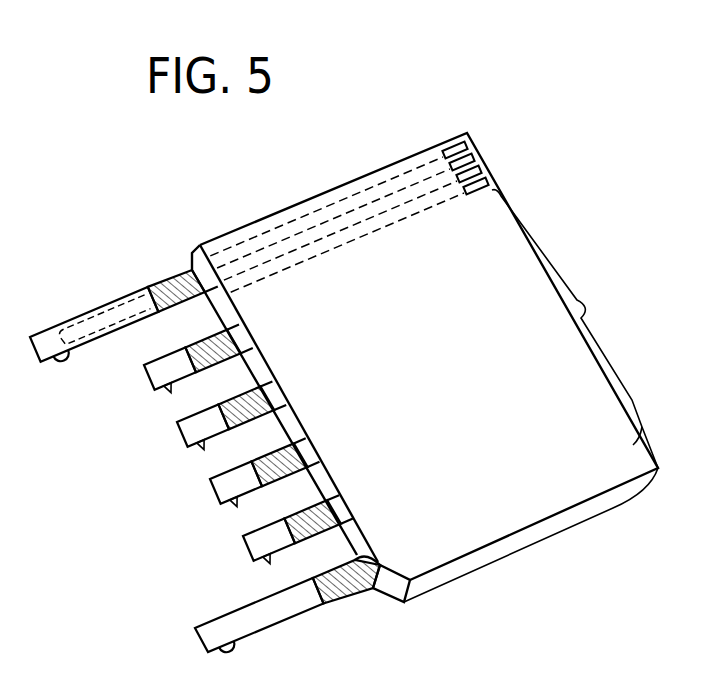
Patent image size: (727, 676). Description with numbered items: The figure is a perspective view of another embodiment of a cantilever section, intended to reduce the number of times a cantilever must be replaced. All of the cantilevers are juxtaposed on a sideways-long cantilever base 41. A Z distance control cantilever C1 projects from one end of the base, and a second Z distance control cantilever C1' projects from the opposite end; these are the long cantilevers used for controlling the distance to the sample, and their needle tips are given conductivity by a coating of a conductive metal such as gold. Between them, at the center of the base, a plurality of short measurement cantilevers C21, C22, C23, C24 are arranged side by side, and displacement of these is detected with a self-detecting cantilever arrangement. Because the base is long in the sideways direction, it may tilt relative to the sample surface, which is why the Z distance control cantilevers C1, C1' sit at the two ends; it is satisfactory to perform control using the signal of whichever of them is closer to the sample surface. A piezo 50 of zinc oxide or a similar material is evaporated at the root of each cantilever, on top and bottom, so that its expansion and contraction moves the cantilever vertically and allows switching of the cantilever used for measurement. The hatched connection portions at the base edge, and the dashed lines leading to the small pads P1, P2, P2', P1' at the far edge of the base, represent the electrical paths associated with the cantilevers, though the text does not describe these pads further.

The cantilever base 41 is at (527, 482).
The contact pad P1 is at (416, 93).
The contact pad P2 is at (481, 127).
The contact pad P2' is at (497, 156).
The contact pad P1' is at (530, 197).
The Z distance control cantilever C1 is at (124, 297).
The measurement cantilever C21 is at (226, 352).
The measurement cantilever C22 is at (255, 404).
The measurement cantilever C23 is at (289, 463).
The measurement cantilever C24 is at (323, 524).
The Z distance control cantilever C1' is at (271, 619).
The piezo 50 is at (353, 588).